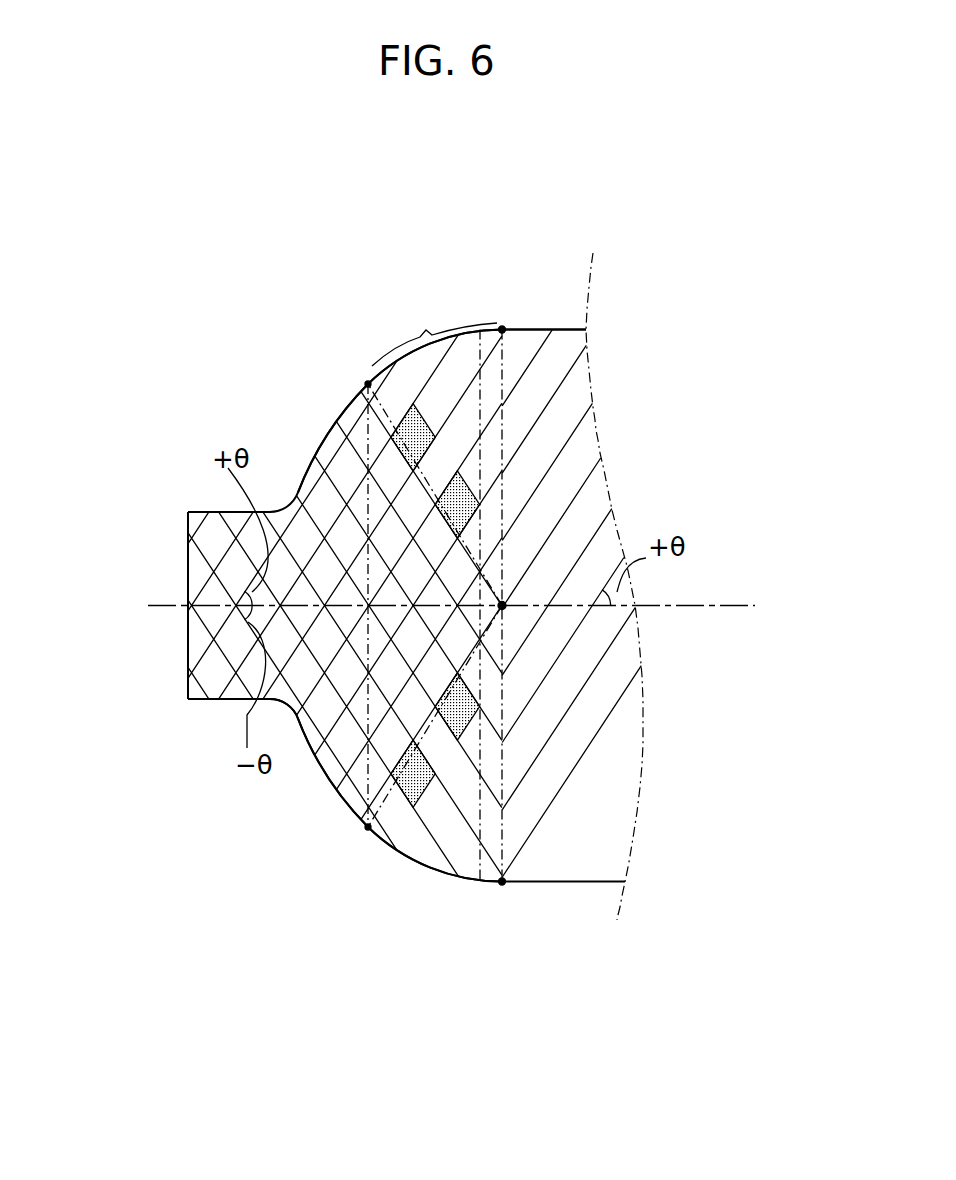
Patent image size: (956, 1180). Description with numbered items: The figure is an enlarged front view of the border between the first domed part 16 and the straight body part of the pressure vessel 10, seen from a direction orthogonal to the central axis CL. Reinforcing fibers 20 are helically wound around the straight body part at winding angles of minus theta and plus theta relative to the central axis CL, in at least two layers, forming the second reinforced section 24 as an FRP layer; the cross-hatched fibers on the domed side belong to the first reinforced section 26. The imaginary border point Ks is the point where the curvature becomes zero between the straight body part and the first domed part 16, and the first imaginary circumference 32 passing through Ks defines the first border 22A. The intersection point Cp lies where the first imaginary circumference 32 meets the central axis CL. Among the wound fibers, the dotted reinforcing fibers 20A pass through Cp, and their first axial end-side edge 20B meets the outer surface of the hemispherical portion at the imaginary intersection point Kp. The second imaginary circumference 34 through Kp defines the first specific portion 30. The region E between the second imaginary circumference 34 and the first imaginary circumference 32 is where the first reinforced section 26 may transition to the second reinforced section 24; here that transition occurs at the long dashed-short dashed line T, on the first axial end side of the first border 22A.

The pressure vessel 10 is at (380, 268).
The reinforcing fibers 20 is at (205, 540).
The reinforcing fibers (dotted portions) 20A is at (460, 500).
The first axial end-side edge 20B is at (403, 462).
The first border 22A is at (500, 310).
The second reinforced section 24 is at (576, 265).
The first reinforced section 26 is at (221, 775).
The first domed part 16 is at (284, 708).
The first specific portion 30 is at (354, 376).
The first imaginary circumference 32 is at (490, 868).
The second imaginary circumference 34 is at (362, 831).
The imaginary intersection point Kp is at (366, 382).
The imaginary border point Ks is at (503, 328).
The intersection point Cp is at (502, 606).
The central axis CL is at (698, 606).
The region E is at (435, 339).
The long dashed-short dashed line T is at (480, 813).